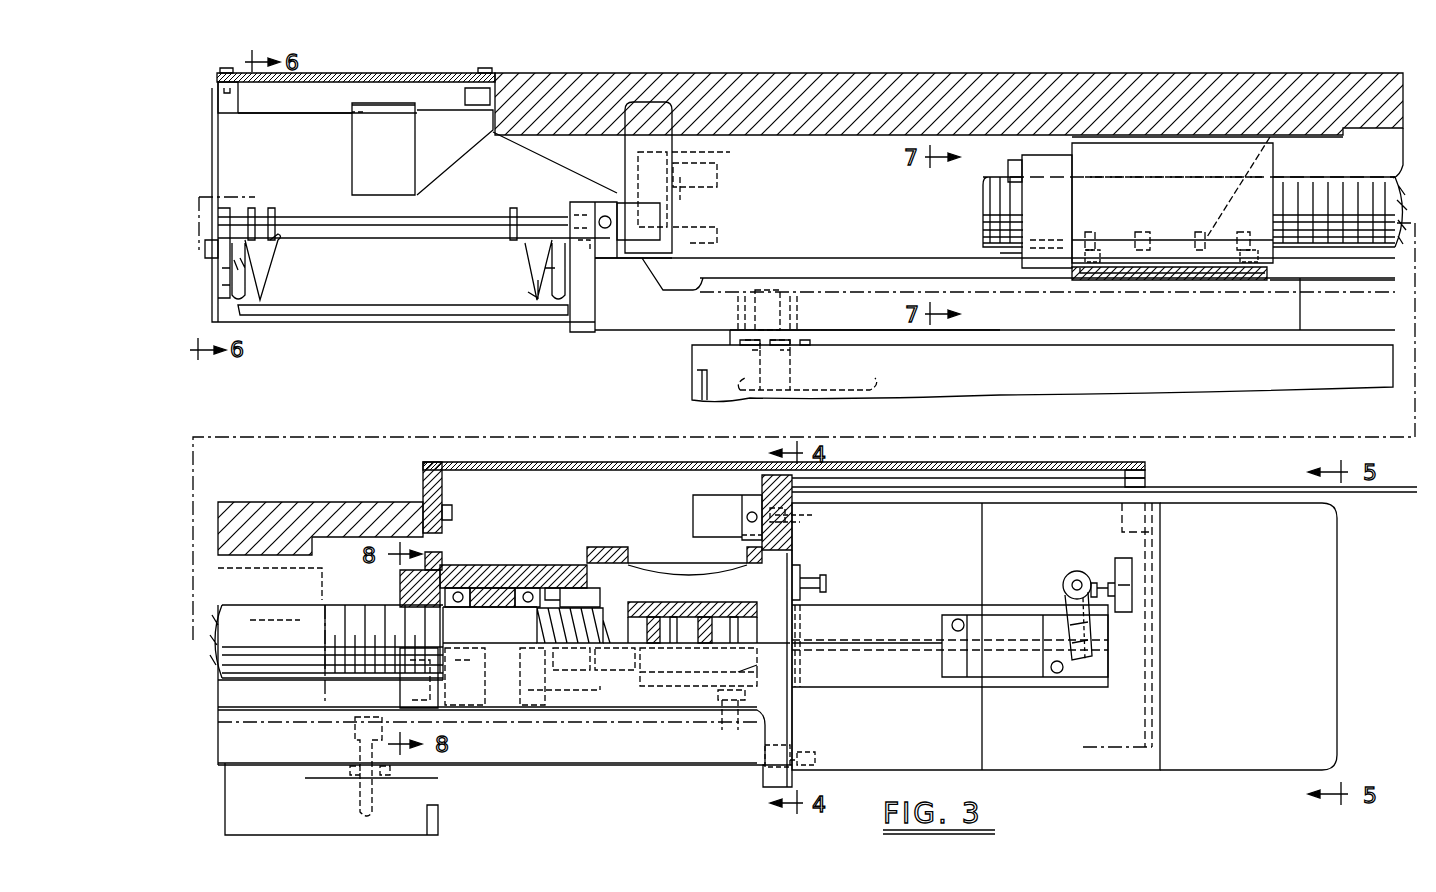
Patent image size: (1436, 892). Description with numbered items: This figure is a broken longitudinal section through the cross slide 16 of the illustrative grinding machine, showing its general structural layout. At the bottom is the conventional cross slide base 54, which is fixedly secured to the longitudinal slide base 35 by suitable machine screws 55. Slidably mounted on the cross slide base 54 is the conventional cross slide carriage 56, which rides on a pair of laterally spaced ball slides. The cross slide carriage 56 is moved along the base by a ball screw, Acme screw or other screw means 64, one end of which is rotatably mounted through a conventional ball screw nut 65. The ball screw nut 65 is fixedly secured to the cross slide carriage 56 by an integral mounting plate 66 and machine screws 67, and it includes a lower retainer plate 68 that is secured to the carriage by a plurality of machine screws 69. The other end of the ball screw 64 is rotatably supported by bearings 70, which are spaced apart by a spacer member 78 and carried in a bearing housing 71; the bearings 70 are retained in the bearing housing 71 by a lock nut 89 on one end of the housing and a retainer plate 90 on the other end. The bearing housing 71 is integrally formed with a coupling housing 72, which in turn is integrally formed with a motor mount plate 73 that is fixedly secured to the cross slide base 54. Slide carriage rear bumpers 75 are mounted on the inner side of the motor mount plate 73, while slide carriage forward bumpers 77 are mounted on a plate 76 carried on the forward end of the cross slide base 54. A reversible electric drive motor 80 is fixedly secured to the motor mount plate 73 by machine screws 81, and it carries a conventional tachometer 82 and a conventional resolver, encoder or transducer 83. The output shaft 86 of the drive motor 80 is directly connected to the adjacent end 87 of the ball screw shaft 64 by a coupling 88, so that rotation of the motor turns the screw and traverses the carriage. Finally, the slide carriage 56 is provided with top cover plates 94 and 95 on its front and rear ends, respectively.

The cross slide 16 is at (473, 338).
The longitudinal slide base 35 is at (1160, 380).
The cross slide base 54 is at (1018, 318).
The machine screws 55 is at (752, 308).
The cross slide carriage 56 is at (872, 128).
The ball screw 64 is at (1372, 190).
The ball screw nut 65 is at (1265, 162).
The mounting plate 66 is at (1022, 272).
The machine screws 67 is at (1012, 167).
The lower retainer plate 68 is at (1150, 280).
The machine screws 69 is at (1100, 262).
The bearings 70 is at (528, 590).
The bearing housing 71 is at (547, 565).
The coupling housing 72 is at (603, 547).
The motor mount plate 73 is at (763, 777).
The slide carriage rear bumpers 75 is at (697, 503).
The plate 76 is at (585, 318).
The slide carriage forward bumpers 77 is at (622, 208).
The spacer member 78 is at (485, 607).
The reversible electric drive motor 80 is at (873, 757).
The machine screws 81 is at (820, 518).
The tachometer 82 is at (1050, 760).
The transducer 83 is at (1237, 760).
The output shaft 86 is at (777, 635).
The adjacent end of ball screw shaft 87 is at (615, 640).
The coupling 88 is at (658, 590).
The lock nut 89 is at (540, 633).
The retainer plate 90 is at (400, 697).
The top cover plate 94 is at (312, 82).
The top cover plate 95 is at (1010, 462).